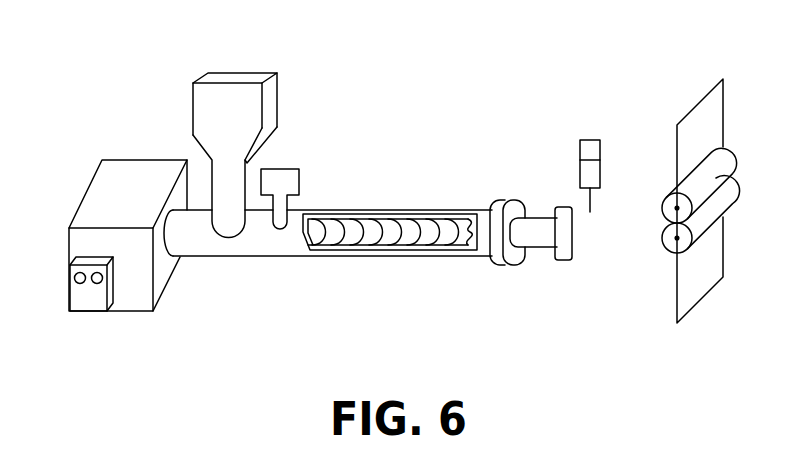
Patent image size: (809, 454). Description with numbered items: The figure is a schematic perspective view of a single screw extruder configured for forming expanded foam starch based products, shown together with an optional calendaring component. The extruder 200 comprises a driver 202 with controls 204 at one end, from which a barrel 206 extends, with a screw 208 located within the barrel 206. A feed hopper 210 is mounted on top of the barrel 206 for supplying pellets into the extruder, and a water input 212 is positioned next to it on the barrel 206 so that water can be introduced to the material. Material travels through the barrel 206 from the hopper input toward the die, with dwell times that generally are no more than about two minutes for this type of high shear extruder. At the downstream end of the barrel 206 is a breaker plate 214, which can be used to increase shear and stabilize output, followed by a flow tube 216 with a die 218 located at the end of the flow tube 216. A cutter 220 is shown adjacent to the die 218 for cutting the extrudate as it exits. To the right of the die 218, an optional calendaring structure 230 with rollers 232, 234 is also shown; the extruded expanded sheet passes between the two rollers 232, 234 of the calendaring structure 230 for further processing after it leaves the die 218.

The extruder 200 is at (336, 96).
The driver 202 is at (80, 194).
The controls 204 is at (78, 291).
The barrel 206 is at (482, 243).
The screw 208 is at (363, 232).
The feed hopper 210 is at (190, 118).
The water input 212 is at (301, 186).
The breaker plate 214 is at (497, 262).
The flow tube 216 is at (540, 218).
The die 218 is at (573, 252).
The cutter 220 is at (580, 164).
The calendaring structure 230 is at (737, 121).
The roller 232 is at (738, 163).
The roller 234 is at (663, 240).